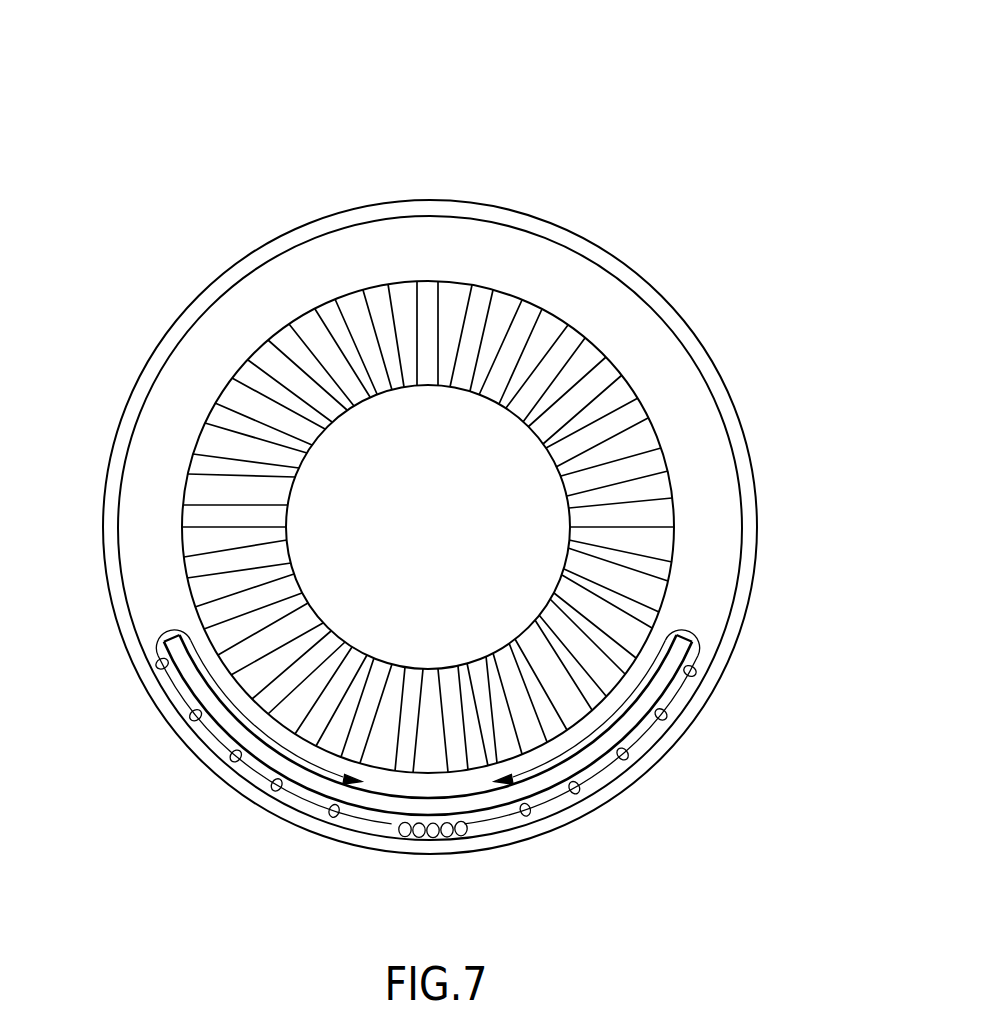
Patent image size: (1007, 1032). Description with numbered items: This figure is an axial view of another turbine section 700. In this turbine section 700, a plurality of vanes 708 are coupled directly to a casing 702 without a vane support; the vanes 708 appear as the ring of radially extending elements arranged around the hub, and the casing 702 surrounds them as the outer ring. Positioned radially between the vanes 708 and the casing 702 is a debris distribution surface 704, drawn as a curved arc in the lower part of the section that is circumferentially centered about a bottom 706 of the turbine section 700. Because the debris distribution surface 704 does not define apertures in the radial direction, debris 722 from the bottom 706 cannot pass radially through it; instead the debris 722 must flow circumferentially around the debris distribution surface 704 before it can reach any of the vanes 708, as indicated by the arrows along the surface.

The turbine section 700 is at (148, 42).
The casing 702 is at (107, 460).
The debris distribution surface 704 is at (188, 685).
The bottom 706 is at (437, 853).
The vanes 708 is at (430, 687).
The debris 722 is at (398, 829).